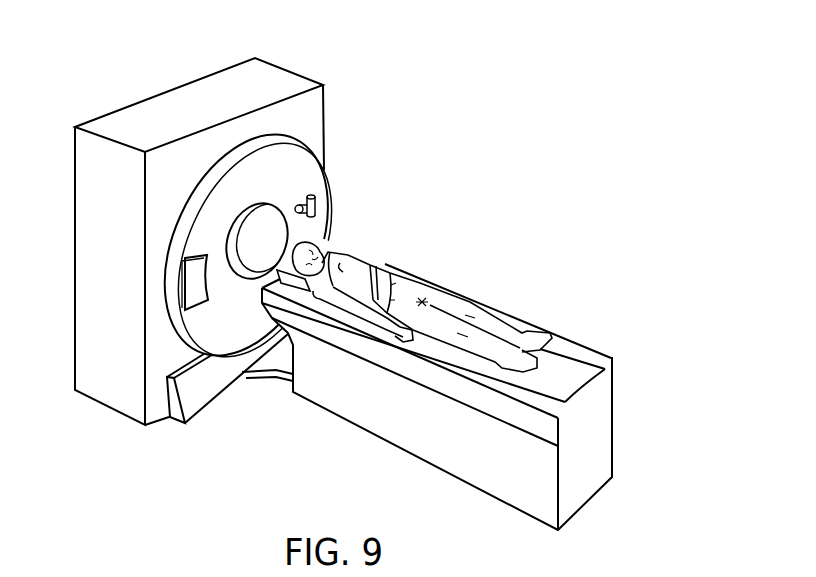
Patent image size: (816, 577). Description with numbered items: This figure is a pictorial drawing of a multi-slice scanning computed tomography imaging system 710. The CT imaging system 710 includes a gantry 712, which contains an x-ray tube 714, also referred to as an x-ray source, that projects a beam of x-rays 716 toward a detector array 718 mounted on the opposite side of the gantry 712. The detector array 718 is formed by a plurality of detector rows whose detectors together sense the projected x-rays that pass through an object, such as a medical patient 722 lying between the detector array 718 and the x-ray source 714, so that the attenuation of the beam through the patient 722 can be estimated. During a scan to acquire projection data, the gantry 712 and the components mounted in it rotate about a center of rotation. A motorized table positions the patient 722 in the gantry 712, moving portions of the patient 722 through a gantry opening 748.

The CT imaging system 710 is at (343, 294).
The gantry 712 is at (317, 110).
The x-ray tube 714 is at (316, 197).
The beam of x-rays 716 is at (401, 437).
The detector array 718 is at (195, 297).
The medical patient 722 is at (385, 262).
The gantry opening 748 is at (260, 242).